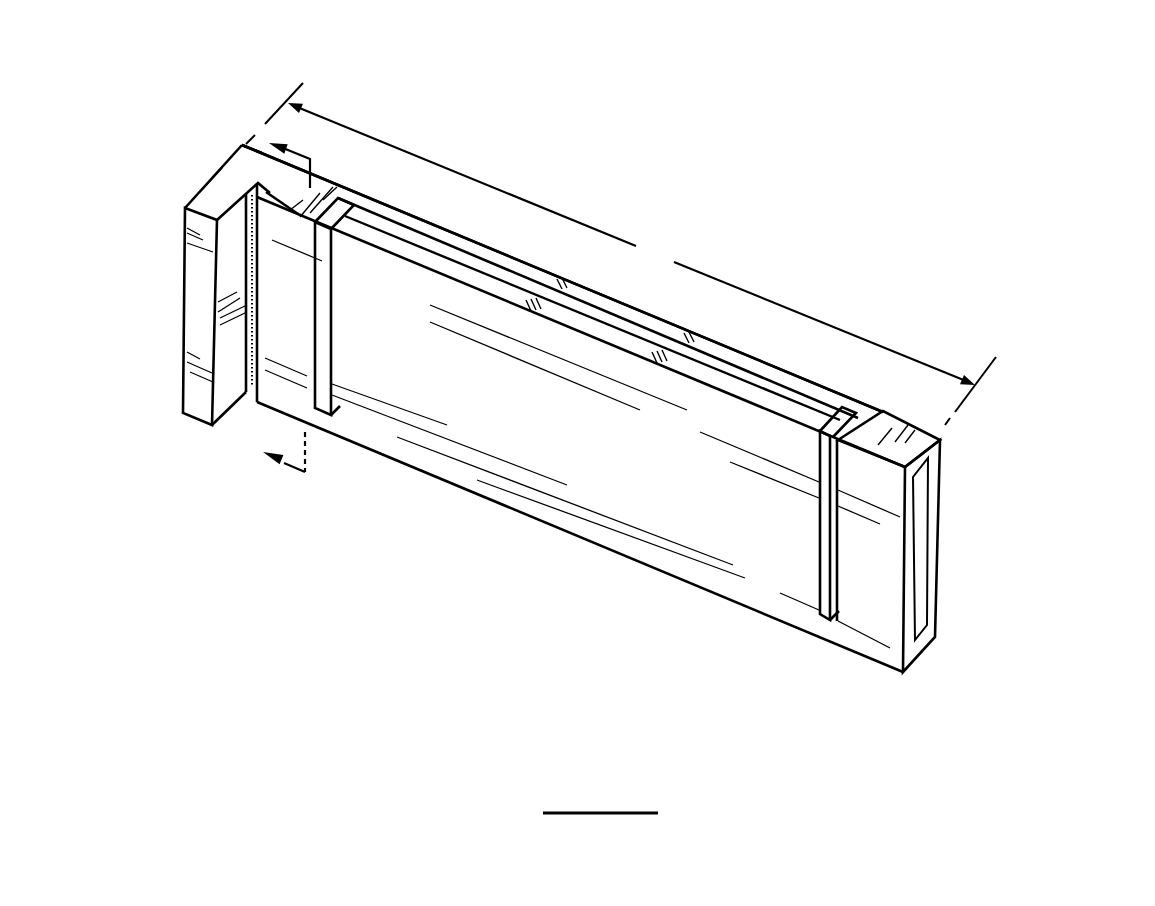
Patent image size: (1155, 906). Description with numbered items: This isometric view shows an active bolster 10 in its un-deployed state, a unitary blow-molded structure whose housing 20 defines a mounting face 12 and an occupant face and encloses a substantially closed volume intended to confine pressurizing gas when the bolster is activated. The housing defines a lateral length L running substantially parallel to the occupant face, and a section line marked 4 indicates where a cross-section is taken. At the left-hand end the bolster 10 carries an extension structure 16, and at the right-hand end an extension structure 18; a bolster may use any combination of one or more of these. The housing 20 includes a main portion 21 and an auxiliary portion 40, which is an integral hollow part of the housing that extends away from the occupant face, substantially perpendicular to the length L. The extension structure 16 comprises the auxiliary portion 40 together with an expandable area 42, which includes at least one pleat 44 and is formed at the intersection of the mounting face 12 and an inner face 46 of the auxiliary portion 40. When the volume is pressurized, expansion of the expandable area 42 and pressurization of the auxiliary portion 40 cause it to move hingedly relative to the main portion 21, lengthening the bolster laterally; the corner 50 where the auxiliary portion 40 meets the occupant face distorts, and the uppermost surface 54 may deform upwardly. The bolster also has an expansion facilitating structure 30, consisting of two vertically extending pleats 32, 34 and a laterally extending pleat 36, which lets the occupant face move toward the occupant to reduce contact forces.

The bolster 10 is at (752, 156).
The mounting face 12 is at (593, 436).
The extension structure 16 is at (221, 490).
The extension structure 18 is at (992, 584).
The housing 20 is at (867, 630).
The main portion 21 is at (594, 230).
The expansion facilitating structure 30 is at (458, 258).
The vertically extending pleat 32 is at (322, 263).
The vertically extending pleat 34 is at (855, 445).
The laterally extending pleat 36 is at (748, 377).
The auxiliary portion 40 is at (200, 200).
The expandable area 42 is at (242, 284).
The pleat 44 is at (247, 337).
The inner face 46 is at (230, 234).
The corner 50 is at (244, 148).
The uppermost surface 54 is at (217, 186).
The section line 4- 4 is at (276, 291).